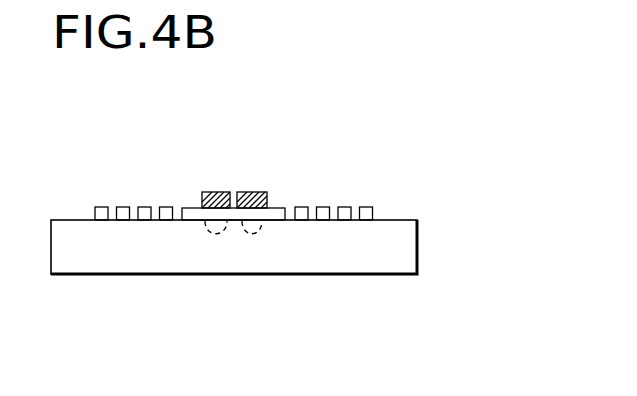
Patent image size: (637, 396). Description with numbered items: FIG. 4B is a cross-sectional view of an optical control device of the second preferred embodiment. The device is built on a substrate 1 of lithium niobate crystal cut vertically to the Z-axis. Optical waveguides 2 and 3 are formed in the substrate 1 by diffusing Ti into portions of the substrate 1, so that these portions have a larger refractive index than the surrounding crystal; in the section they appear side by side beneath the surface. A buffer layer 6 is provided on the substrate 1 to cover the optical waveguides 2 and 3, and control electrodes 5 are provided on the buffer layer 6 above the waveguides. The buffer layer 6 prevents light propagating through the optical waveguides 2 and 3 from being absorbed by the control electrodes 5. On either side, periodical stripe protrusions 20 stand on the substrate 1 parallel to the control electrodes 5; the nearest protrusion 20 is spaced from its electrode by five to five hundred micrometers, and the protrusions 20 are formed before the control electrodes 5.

The substrate 1 is at (402, 240).
The optical waveguide 2 is at (212, 233).
The optical waveguide 3 is at (252, 233).
The control electrode 5 is at (253, 192).
The buffer layer 6 is at (281, 213).
The stripe protrusion 20 is at (382, 198).